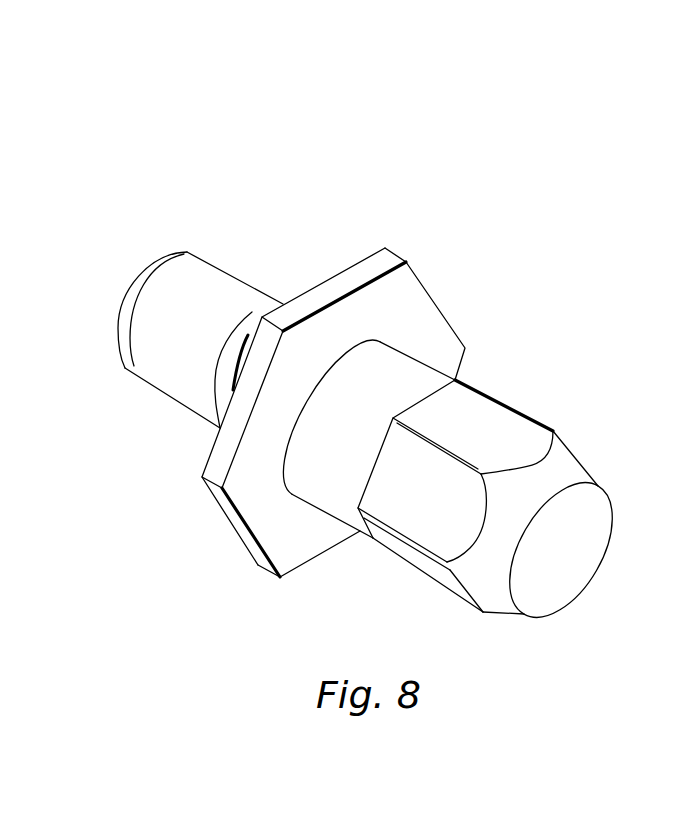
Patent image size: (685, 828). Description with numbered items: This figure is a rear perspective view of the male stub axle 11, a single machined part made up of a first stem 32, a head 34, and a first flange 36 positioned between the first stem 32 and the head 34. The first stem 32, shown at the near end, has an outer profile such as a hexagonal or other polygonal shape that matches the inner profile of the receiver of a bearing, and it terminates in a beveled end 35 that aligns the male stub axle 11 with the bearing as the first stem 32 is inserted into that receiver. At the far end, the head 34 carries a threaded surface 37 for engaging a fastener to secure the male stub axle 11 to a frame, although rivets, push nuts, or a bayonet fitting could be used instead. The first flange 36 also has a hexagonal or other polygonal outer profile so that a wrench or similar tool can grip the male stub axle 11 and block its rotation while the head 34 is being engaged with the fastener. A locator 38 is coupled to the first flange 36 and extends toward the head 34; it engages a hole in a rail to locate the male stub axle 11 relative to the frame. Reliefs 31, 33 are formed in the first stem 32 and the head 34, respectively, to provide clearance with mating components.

The male stub axle 11 is at (576, 129).
The relief 31 is at (226, 375).
The first stem 32 is at (540, 411).
The relief 33 is at (402, 371).
The head 34 is at (222, 256).
The beveled end 35 is at (567, 465).
The first flange 36 is at (399, 246).
The threaded surface 37 is at (183, 282).
The locator 38 is at (258, 453).